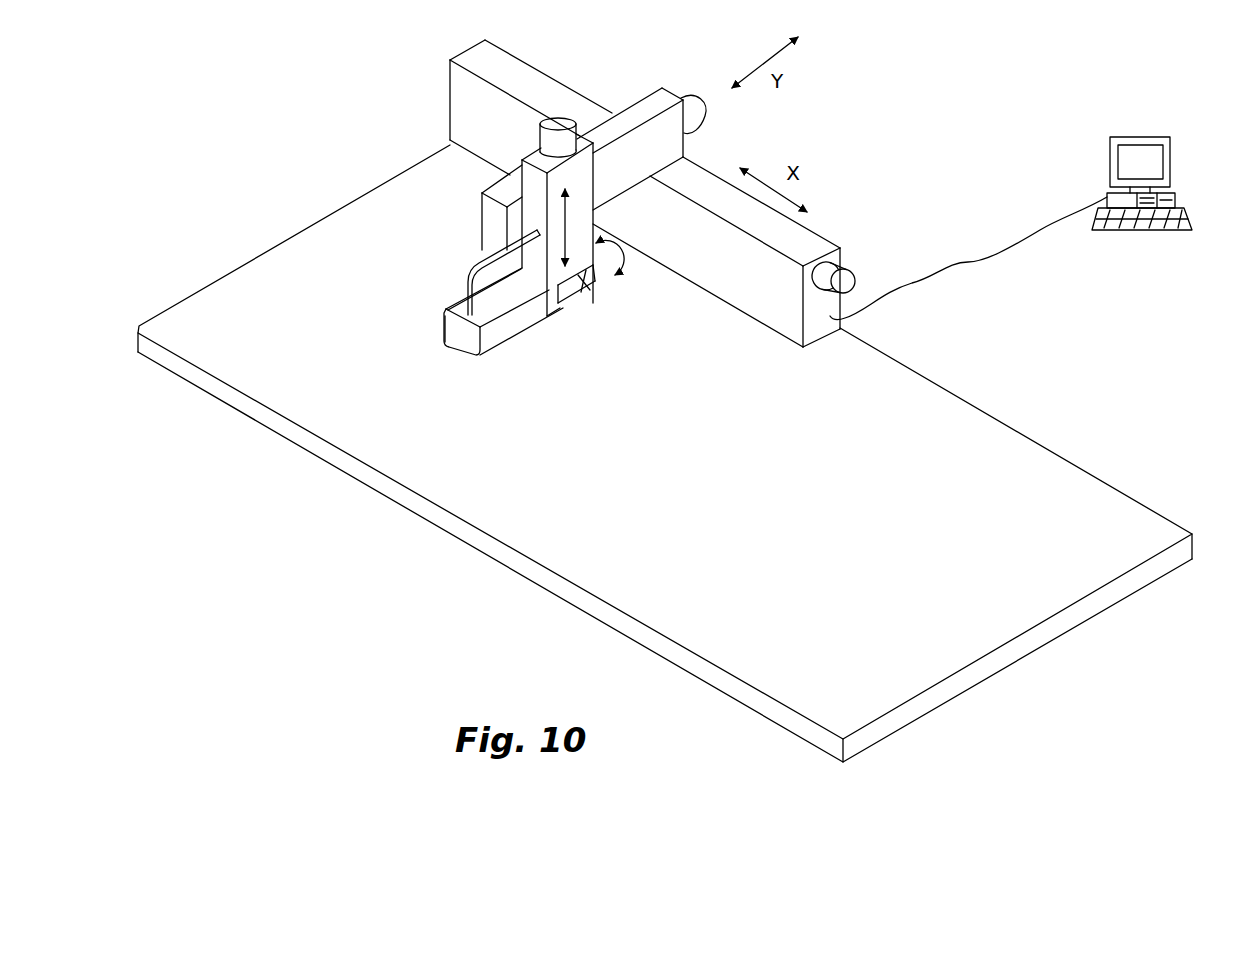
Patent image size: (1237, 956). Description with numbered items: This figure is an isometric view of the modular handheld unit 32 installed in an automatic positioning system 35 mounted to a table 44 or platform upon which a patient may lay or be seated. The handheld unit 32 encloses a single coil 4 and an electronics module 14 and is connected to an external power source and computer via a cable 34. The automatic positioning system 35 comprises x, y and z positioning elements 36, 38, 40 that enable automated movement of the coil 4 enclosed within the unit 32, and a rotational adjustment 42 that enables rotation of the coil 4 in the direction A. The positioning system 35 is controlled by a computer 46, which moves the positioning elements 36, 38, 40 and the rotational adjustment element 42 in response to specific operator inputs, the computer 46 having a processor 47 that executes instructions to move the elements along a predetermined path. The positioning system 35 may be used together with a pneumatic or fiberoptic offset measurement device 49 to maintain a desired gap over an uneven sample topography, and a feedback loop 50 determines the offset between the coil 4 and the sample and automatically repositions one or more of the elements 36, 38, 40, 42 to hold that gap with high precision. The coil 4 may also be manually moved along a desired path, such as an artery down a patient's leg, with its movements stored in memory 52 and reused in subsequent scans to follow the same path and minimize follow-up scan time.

The coil 4 is at (472, 359).
The electronics module 14 is at (523, 296).
The handheld unit 32 is at (522, 342).
The cable 34 is at (485, 265).
The automatic positioning system 35 is at (906, 87).
The x positioning element 36 is at (832, 243).
The y positioning element 38 is at (660, 83).
The z positioning element 40 is at (587, 158).
The rotational adjustment 42 is at (596, 272).
The table 44 is at (1042, 462).
The computer 46 is at (1154, 140).
The processor 47 is at (1142, 183).
The offset measurement device 49 is at (597, 295).
The feedback loop 50 is at (574, 291).
The memory 52 is at (1131, 136).